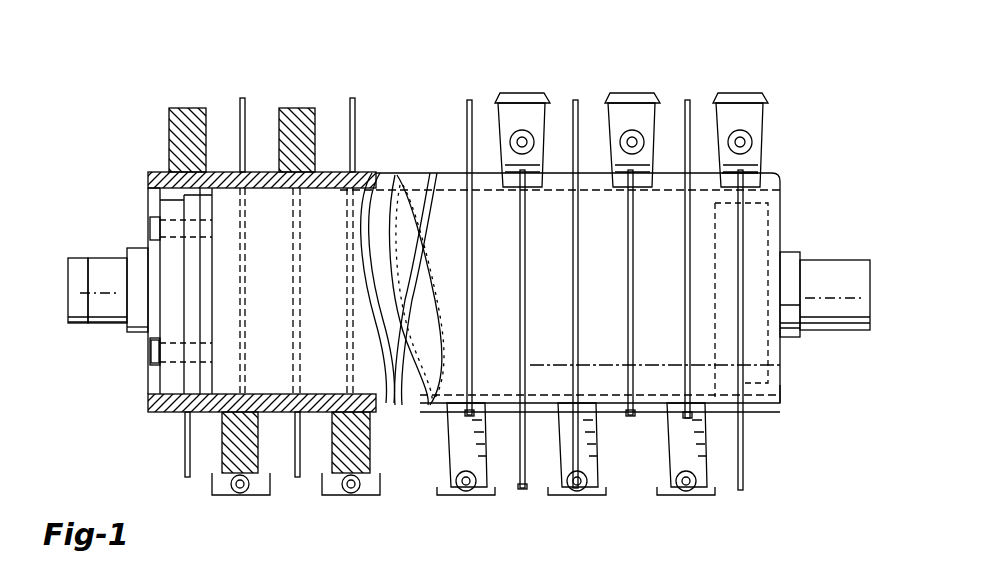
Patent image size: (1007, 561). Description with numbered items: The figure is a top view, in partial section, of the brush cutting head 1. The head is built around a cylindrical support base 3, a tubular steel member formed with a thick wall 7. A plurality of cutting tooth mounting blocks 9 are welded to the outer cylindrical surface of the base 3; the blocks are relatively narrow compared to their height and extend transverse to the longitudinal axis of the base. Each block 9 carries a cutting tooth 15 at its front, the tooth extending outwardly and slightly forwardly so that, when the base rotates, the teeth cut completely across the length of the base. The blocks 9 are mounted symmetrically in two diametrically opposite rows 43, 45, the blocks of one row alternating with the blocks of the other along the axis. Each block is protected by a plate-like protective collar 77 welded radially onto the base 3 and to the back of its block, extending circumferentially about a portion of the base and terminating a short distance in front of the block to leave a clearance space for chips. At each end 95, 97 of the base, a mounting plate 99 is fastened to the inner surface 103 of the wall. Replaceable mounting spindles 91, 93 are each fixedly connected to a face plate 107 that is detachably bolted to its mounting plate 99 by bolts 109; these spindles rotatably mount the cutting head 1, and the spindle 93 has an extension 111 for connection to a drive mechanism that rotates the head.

The brush cutting head 1 is at (130, 83).
The cylindrical support base 3 is at (783, 181).
The thick wall 7 is at (150, 382).
The cutting tooth mounting block 9 is at (760, 172).
The cutting tooth 15 is at (283, 103).
The row of blocks 43 is at (508, 92).
The row of blocks 45 is at (517, 499).
The protective collar 77 is at (353, 100).
The mounting spindle 91 is at (73, 326).
The mounting spindle 93 is at (801, 252).
The end of base 95 is at (148, 185).
The end of base 97 is at (783, 385).
The mounting plate 99 is at (213, 322).
The inner surface of wall 103 is at (148, 190).
The face plate 107 is at (160, 265).
The bolt 109 is at (150, 353).
The extension 111 is at (825, 308).